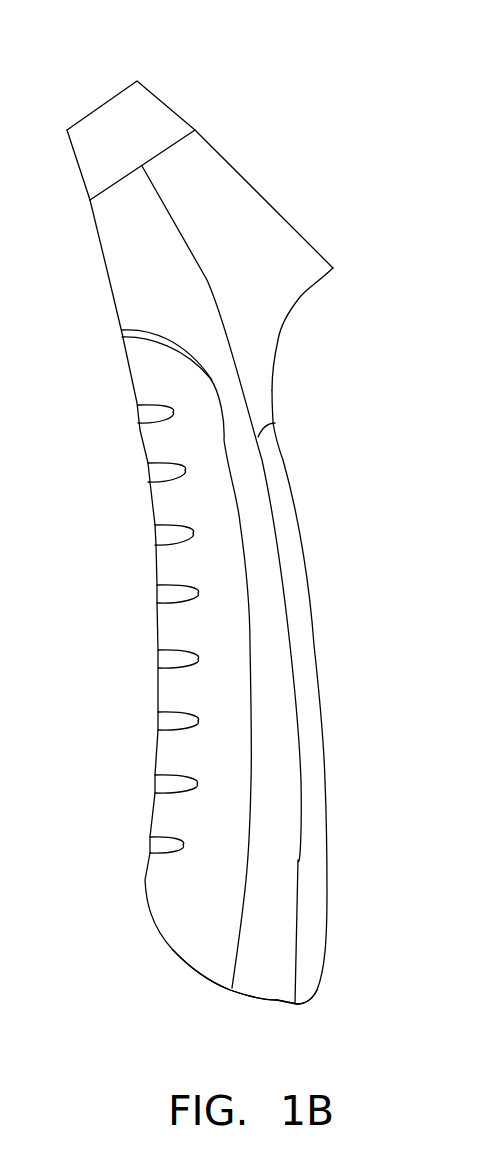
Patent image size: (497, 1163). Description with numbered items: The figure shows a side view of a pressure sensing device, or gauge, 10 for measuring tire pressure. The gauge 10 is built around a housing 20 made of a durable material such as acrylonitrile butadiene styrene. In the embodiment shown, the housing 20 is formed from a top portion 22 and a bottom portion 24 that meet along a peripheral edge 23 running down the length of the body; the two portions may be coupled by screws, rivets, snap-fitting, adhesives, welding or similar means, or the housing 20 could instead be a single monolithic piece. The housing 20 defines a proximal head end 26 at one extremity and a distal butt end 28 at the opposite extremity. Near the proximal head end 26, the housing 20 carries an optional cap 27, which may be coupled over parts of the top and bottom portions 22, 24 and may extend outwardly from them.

The pressure sensing device 10 is at (378, 128).
The housing 20 is at (210, 145).
The top portion 22 is at (268, 268).
The peripheral edge 23 is at (251, 402).
The bottom portion 24 is at (130, 288).
The proximal head end 26 is at (122, 108).
The cap 27 is at (88, 157).
The distal butt end 28 is at (265, 982).